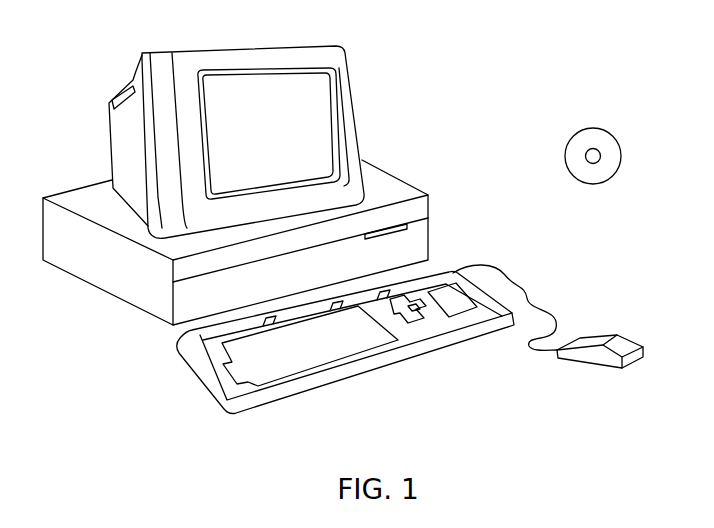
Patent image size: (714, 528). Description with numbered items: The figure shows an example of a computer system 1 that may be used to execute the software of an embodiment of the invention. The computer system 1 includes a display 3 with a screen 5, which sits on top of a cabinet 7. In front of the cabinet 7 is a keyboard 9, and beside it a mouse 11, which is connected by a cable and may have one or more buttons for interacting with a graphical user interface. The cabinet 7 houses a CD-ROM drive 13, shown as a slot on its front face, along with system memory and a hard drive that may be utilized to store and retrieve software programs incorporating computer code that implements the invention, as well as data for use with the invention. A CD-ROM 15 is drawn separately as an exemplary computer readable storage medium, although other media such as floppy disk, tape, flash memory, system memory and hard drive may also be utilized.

The computer system 1 is at (532, 23).
The display 3 is at (266, 142).
The screen 5 is at (327, 100).
The cabinet 7 is at (262, 259).
The keyboard 9 is at (342, 378).
The mouse 11 is at (635, 340).
The CD-ROM drive 13 is at (407, 226).
The CD-ROM 15 is at (606, 131).